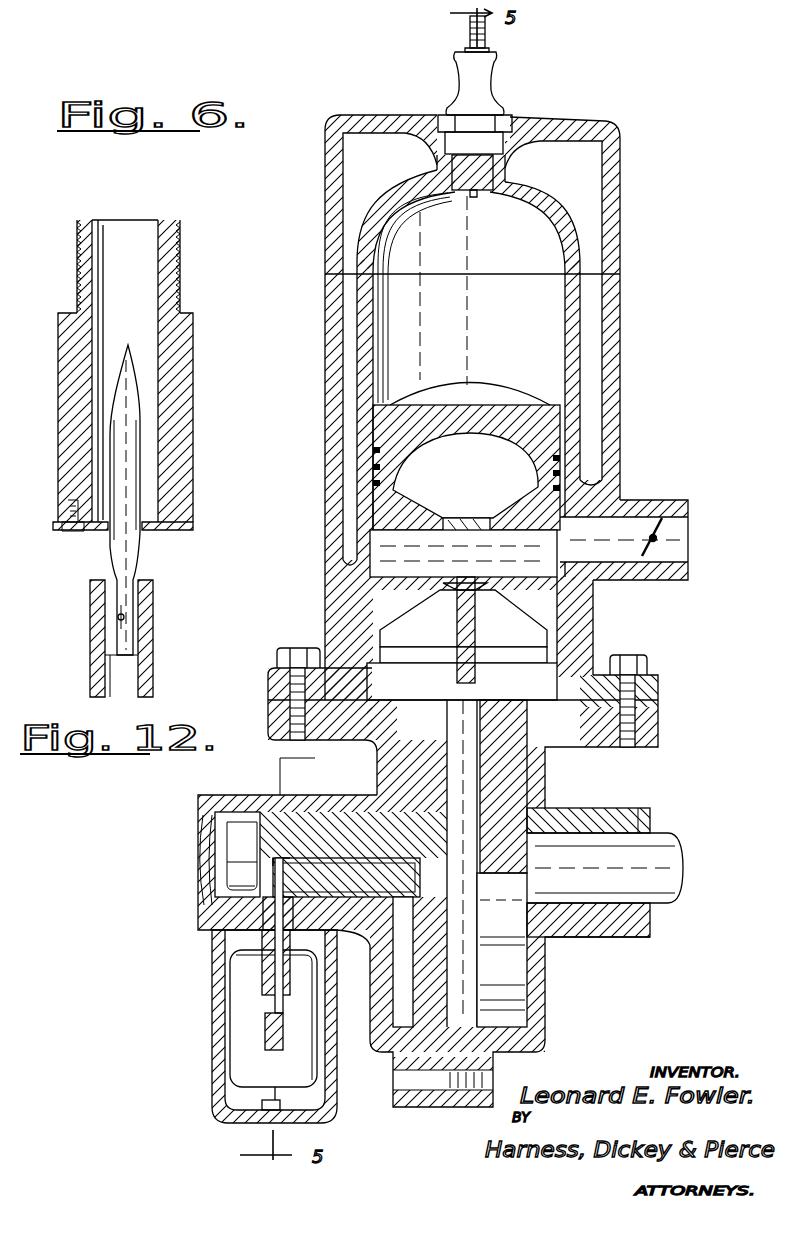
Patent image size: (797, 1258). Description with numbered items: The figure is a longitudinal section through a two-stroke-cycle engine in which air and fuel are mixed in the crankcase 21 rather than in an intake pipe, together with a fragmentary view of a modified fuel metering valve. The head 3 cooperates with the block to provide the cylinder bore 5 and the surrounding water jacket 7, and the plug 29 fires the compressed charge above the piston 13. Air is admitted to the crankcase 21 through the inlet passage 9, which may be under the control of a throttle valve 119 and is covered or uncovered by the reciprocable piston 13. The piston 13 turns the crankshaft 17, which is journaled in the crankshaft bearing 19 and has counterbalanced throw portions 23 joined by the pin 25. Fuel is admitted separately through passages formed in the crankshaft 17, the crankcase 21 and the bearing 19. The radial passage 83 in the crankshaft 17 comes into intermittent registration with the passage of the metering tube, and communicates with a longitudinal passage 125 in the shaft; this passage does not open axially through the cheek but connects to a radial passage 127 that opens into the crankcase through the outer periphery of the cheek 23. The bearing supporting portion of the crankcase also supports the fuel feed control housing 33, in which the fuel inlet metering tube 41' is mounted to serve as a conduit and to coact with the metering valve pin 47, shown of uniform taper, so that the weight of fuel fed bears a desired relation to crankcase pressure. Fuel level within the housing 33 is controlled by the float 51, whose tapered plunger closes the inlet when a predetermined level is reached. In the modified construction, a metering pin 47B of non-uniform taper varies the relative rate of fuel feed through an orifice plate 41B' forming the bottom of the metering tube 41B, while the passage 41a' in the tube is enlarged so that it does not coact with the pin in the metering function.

In FIG. 6, the head 3 is at (612, 202).
In FIG. 6, the cylinder bore 5 is at (560, 362).
In FIG. 6, the water jacket 7 is at (592, 320).
In FIG. 6, the inlet passage 9 is at (690, 516).
In FIG. 6, the piston 13 is at (477, 405).
In FIG. 6, the crankshaft 17 is at (680, 896).
In FIG. 6, the crankshaft bearing 19 is at (650, 916).
In FIG. 6, the crankcase 21 is at (540, 783).
In FIG. 6, the counterbalanced throw portion 23 is at (400, 1020).
In FIG. 6, the pin 25 is at (470, 928).
In FIG. 6, the plug 29 is at (480, 88).
In FIG. 6, the fuel feed control housing 33 is at (213, 1073).
In FIG. 6, the fuel inlet metering tube 41' is at (261, 980).
In FIG. 6, the metering valve pin 47 is at (283, 1000).
In FIG. 6, the float 51 is at (295, 1075).
In FIG. 6, the radial passage 83 is at (290, 870).
In FIG. 6, the throttle valve 119 is at (672, 536).
In FIG. 6, the longitudinal passage 125 is at (334, 858).
In FIG. 6, the radial passage 127 is at (408, 889).
In FIG. 12, the passage 41a' is at (155, 266).
In FIG. 12, the metering tube 41B is at (151, 371).
In FIG. 12, the orifice plate 41B' is at (137, 530).
In FIG. 12, the metering pin 47B is at (113, 547).